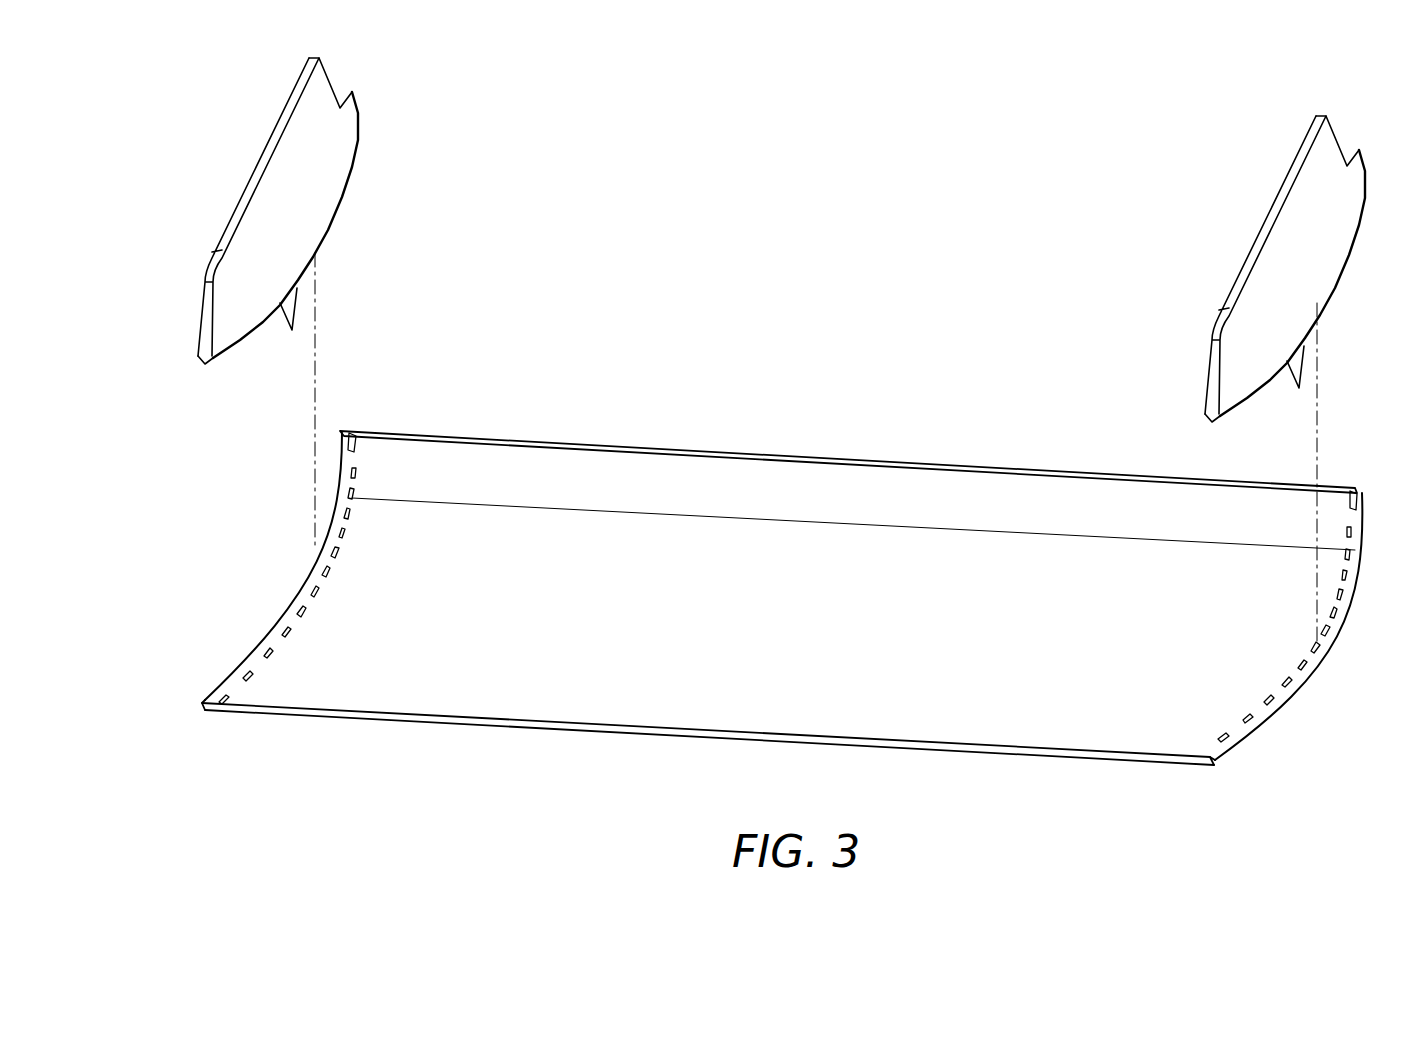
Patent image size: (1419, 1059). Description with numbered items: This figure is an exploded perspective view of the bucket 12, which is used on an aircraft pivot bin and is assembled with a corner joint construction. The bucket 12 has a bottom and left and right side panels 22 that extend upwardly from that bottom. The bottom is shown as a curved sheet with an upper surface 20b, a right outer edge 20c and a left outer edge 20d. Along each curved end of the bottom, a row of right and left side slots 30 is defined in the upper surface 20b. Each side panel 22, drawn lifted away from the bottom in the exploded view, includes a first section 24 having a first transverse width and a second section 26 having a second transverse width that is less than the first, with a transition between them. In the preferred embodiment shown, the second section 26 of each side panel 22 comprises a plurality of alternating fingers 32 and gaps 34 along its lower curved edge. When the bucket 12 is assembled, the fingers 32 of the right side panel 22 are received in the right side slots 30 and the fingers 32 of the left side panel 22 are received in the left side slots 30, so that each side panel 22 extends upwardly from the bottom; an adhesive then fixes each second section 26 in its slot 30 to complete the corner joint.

The bucket 12 is at (966, 343).
The upper surface 20b is at (762, 712).
The right outer edge 20c is at (1225, 763).
The left outer edge 20d is at (197, 703).
The side panel 22 is at (270, 200).
The first section 24 is at (223, 223).
The second section 26 is at (210, 363).
The side slot 30 is at (243, 667).
The fingers 32 is at (796, 356).
The gaps 34 is at (240, 337).